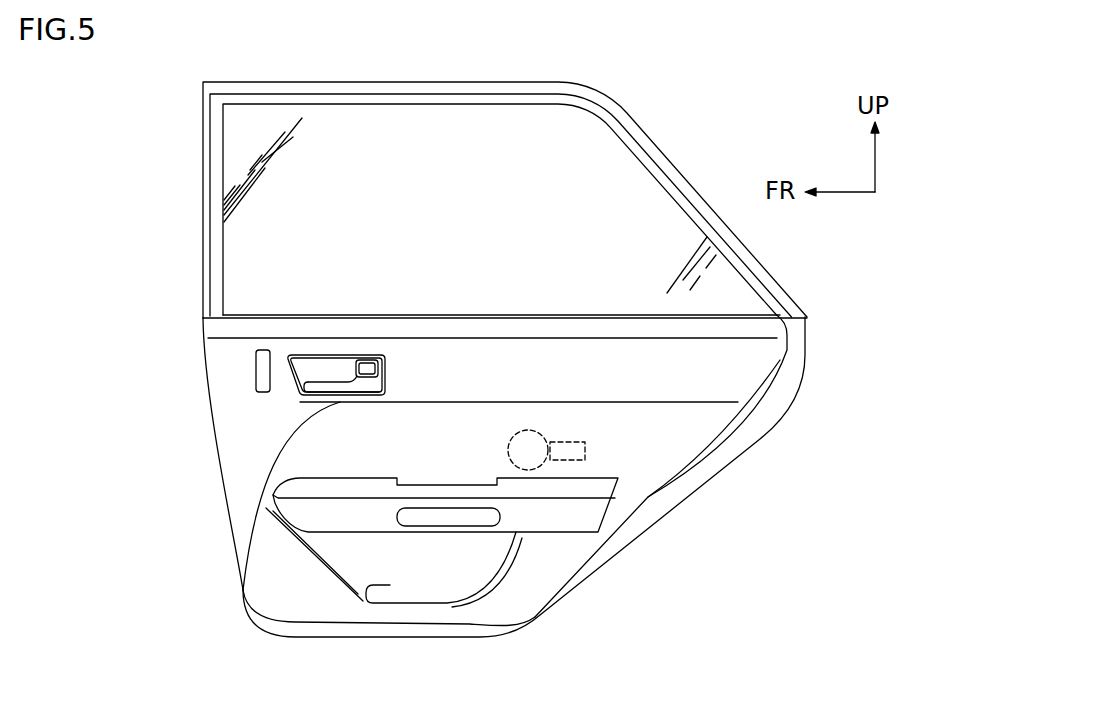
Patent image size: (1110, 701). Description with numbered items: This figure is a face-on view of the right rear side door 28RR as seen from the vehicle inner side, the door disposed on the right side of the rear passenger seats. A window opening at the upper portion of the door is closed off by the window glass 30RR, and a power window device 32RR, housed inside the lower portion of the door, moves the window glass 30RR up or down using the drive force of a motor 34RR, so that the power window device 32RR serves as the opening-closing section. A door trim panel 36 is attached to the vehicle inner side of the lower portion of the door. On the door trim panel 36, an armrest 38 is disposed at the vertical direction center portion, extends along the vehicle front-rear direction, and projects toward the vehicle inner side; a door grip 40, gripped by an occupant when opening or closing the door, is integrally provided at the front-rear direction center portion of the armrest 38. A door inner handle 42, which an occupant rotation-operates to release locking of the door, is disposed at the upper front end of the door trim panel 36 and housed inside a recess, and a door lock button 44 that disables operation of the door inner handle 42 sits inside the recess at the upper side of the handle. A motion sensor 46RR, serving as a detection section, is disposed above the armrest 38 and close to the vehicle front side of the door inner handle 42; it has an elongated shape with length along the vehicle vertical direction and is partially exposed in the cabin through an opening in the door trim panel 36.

The right rear side door 28RR is at (790, 281).
The window glass 30RR is at (600, 177).
The power window device 32RR is at (561, 442).
The motor 34RR is at (570, 359).
The door trim panel 36 is at (660, 447).
The armrest 38 is at (552, 513).
The door grip 40 is at (436, 484).
The door inner handle 42 is at (333, 397).
The door lock button 44 is at (358, 359).
The motion sensor 46RR is at (261, 349).